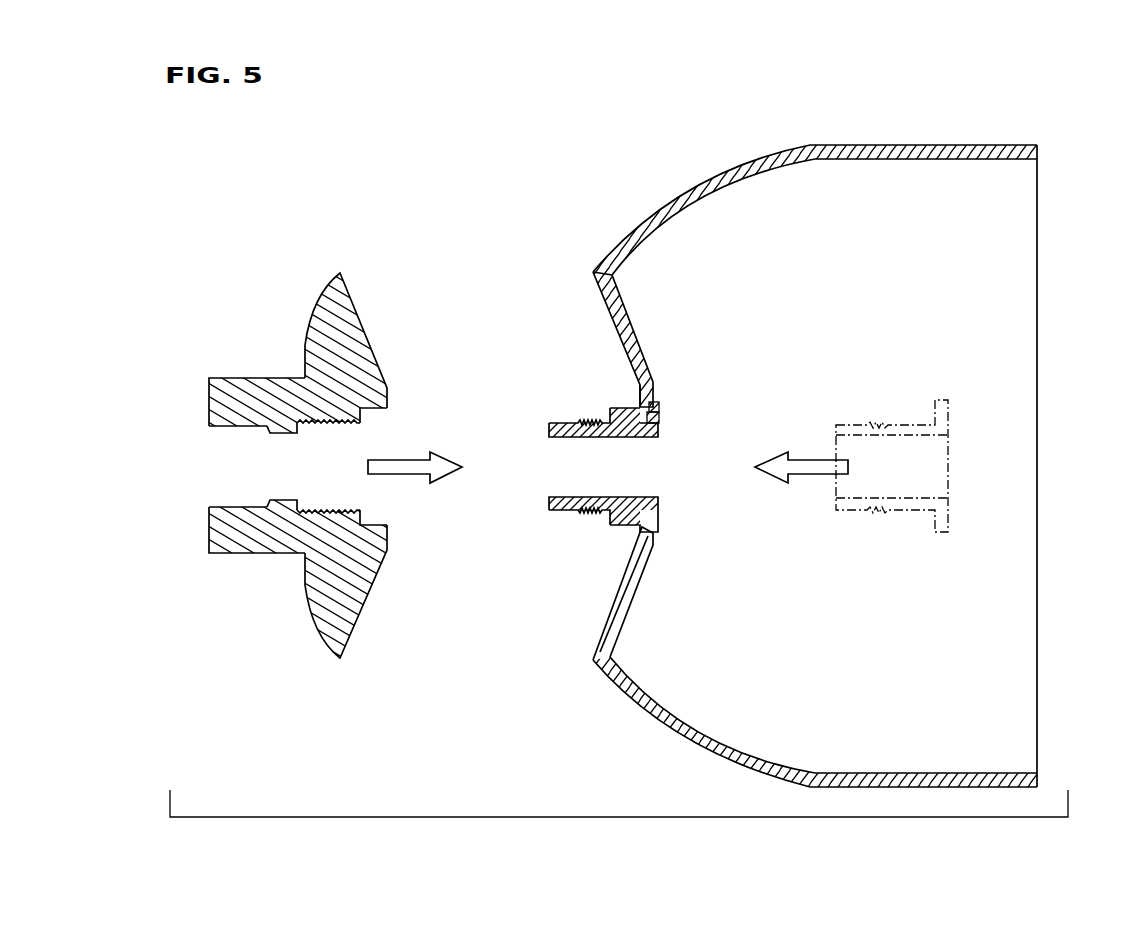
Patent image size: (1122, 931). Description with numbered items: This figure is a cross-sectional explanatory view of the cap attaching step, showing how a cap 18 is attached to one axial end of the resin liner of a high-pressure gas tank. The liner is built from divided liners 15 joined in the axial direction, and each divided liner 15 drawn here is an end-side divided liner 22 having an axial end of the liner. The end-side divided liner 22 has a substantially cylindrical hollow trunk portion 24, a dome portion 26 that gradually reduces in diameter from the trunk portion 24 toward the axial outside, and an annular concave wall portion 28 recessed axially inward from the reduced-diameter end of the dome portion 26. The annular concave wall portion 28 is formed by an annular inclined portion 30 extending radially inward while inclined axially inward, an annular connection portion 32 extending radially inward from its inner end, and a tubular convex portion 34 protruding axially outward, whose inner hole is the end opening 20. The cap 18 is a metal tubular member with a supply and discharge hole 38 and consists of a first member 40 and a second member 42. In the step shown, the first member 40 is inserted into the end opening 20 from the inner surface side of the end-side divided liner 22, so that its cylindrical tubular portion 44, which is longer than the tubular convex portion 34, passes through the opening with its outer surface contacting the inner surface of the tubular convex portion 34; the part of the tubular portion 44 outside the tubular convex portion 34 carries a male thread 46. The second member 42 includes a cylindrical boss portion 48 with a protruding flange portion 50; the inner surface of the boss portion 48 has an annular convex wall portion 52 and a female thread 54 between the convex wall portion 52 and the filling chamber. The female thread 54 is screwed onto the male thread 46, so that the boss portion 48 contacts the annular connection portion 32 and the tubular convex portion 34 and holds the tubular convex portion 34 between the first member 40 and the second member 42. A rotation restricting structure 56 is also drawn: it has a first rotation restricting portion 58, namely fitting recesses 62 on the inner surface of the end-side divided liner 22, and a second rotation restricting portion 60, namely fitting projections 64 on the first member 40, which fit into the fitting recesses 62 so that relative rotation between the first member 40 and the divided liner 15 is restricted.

The divided liner 15 is at (841, 431).
The end-side divided liner 22 is at (841, 431).
The cap 18 is at (561, 471).
The end opening 20 is at (624, 520).
The trunk portion 24 is at (905, 148).
The dome portion 26 is at (680, 197).
The annular concave wall portion 28 is at (633, 306).
The annular inclined portion 30 is at (654, 466).
The annular connection portion 32 is at (655, 387).
The tubular convex portion 34 is at (628, 410).
The supply and discharge hole 38 is at (223, 468).
The first member 40 is at (735, 478).
The second member 42 is at (313, 465).
The tubular portion 44 is at (548, 422).
The male thread 46 is at (593, 512).
The boss portion 48 is at (235, 388).
The flange portion 50 is at (327, 308).
The annular convex wall portion 52 is at (278, 430).
The female thread 54 is at (345, 508).
The rotation restricting structure 56 is at (737, 405).
The first rotation restricting portion 58 is at (715, 392).
The second rotation restricting portion 60 is at (714, 419).
The fitting recess 62 is at (658, 403).
The fitting projection 64 is at (657, 413).